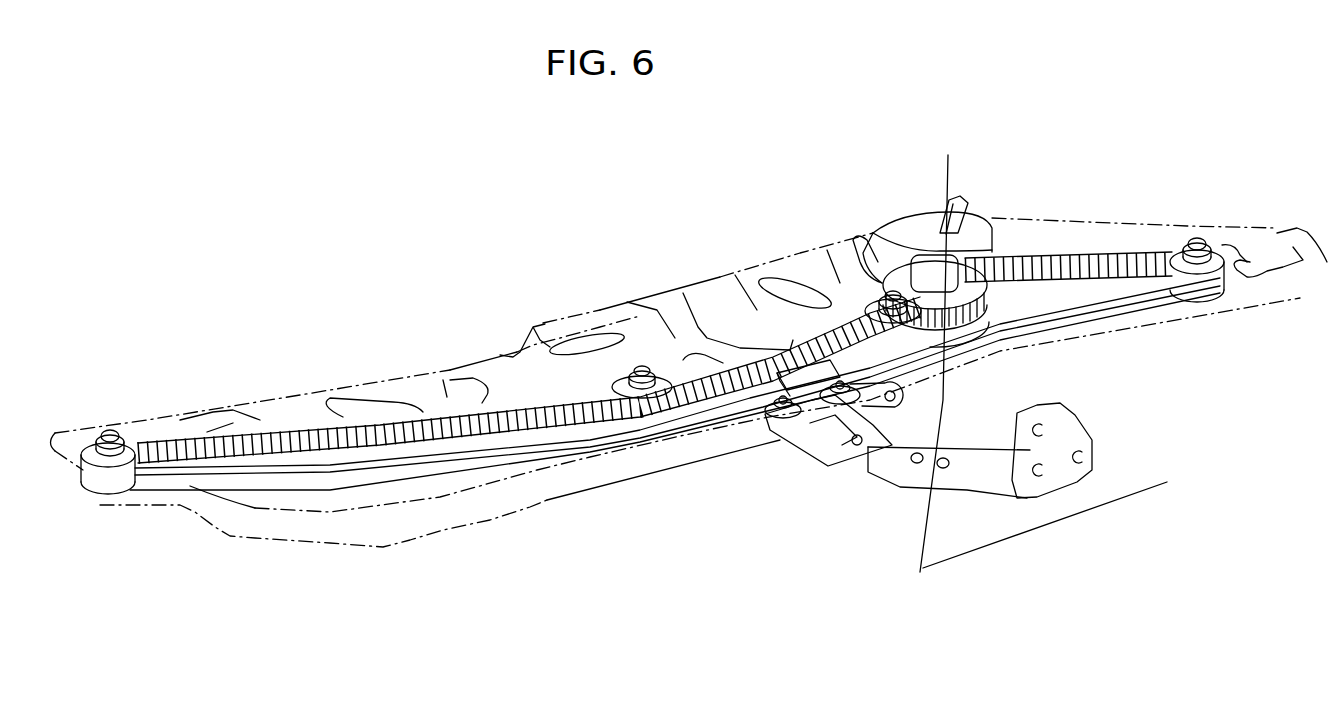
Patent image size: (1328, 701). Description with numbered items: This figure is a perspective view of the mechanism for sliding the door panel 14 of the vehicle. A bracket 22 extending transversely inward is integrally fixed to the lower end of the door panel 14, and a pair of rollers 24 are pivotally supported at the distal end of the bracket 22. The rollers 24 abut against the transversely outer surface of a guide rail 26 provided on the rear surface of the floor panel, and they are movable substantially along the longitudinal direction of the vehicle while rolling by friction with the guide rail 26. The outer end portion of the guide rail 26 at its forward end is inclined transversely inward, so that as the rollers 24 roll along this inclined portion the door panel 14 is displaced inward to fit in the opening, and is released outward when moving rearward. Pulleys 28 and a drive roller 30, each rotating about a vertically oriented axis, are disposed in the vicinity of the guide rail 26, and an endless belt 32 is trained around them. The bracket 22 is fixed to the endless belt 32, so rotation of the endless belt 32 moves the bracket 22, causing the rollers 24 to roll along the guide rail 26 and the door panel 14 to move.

The door panel 14 is at (978, 550).
The bracket 22 is at (893, 478).
The rollers 24 is at (853, 382).
The guide rail 26 is at (555, 502).
The pulleys 28 is at (98, 440).
The drive roller 30 is at (995, 307).
The endless belt 32 is at (512, 418).